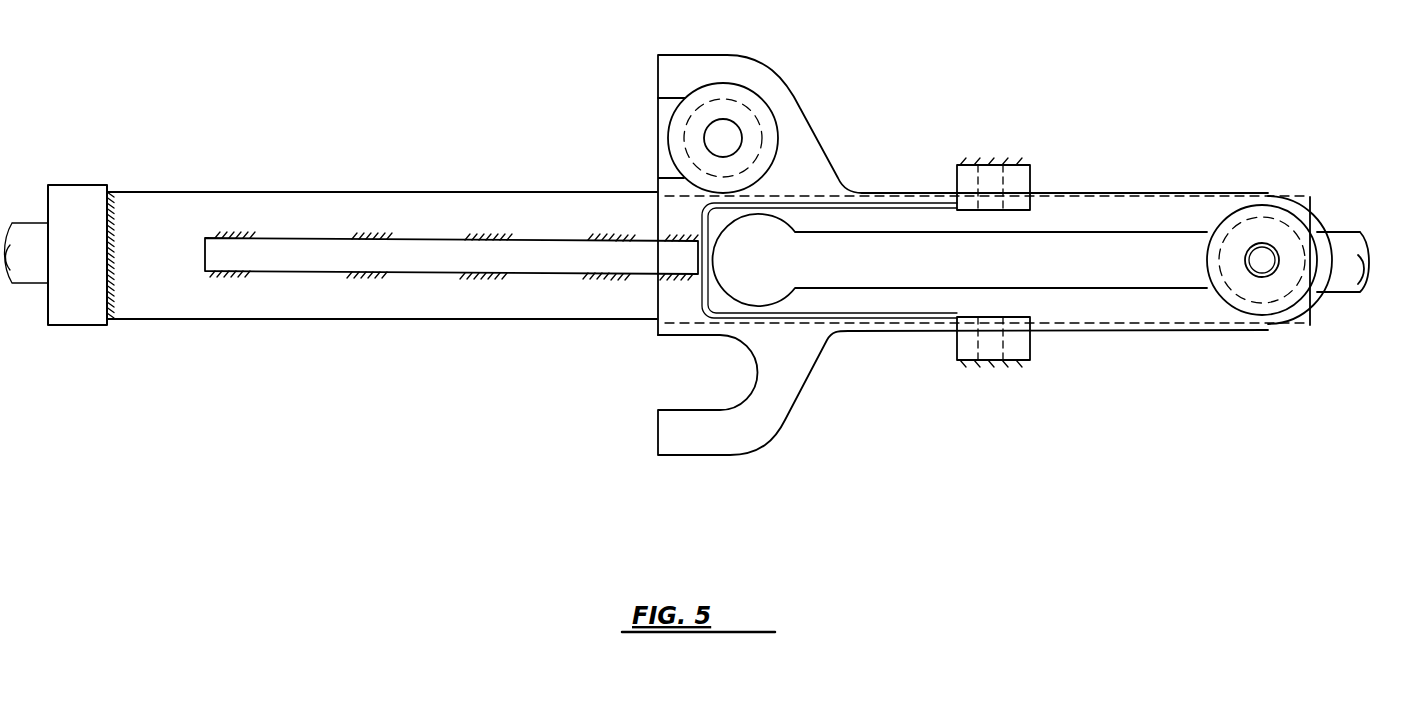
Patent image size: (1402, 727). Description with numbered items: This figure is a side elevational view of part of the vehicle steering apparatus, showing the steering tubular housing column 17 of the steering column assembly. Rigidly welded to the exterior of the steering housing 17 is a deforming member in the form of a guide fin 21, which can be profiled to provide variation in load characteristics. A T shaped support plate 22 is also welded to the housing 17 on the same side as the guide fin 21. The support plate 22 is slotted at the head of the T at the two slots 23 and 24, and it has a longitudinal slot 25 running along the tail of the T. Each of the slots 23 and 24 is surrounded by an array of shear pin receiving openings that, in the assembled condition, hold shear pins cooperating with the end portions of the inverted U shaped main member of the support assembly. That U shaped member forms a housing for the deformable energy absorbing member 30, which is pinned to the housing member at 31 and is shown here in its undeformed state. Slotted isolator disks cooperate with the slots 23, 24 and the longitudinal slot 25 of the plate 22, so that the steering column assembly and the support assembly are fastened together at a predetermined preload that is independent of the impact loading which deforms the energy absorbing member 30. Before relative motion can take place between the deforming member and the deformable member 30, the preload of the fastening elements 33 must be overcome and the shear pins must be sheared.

The steering tubular housing column 17 is at (311, 192).
The guide fin 21 is at (340, 267).
The T shaped support plate 22 is at (792, 63).
The slot 23 is at (650, 139).
The slot 24 is at (670, 378).
The longitudinal slot 25 is at (1112, 273).
The deformable energy absorbing member 30 is at (880, 210).
The pin 31 is at (1010, 166).
The fastening elements 33 is at (742, 143).